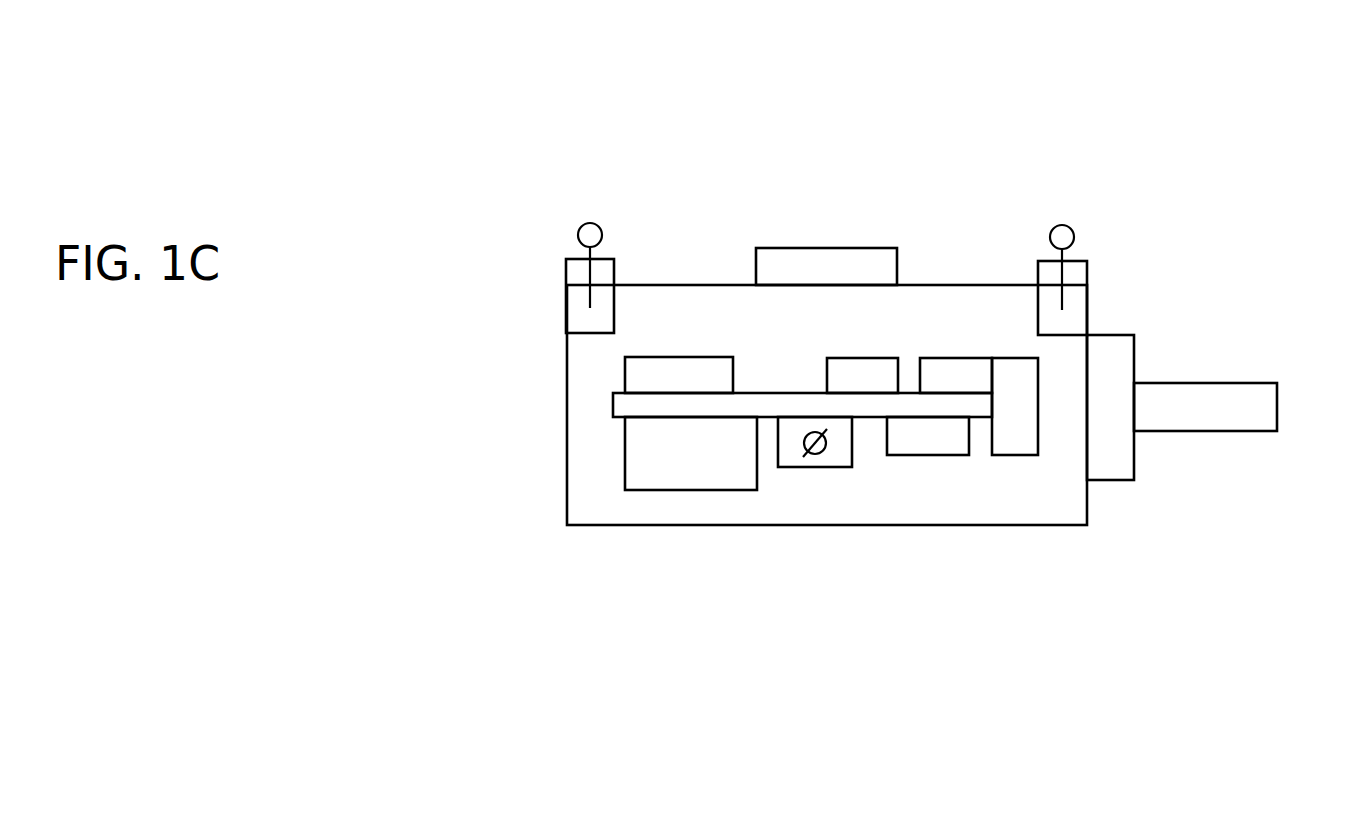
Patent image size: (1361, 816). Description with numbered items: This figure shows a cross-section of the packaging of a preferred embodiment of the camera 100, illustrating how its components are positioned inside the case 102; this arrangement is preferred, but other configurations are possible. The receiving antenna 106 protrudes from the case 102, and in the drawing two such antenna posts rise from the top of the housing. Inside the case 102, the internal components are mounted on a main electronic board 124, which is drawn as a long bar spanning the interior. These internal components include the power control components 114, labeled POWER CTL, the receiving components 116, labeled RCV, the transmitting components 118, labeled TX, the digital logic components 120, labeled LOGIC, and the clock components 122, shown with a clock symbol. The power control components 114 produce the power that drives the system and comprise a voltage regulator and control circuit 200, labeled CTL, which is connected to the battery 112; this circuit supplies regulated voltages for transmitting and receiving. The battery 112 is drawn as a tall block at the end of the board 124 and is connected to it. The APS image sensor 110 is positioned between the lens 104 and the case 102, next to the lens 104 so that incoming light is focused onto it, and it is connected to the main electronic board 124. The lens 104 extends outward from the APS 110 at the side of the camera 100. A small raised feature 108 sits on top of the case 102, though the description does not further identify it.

The camera 100 is at (1133, 92).
The case 102 is at (565, 405).
The lens 104 is at (1182, 431).
The receiving antenna 106 is at (565, 293).
The button 108 is at (754, 250).
The APS image sensor 110 is at (1112, 480).
The battery 112 is at (1016, 455).
The power control components 114 is at (660, 490).
The receiving components 116 is at (875, 358).
The transmitting components 118 is at (920, 455).
The digital logic components 120 is at (623, 382).
The clock components 122 is at (803, 467).
The main electronic board 124 is at (612, 407).
The voltage regulator and control circuit 200 is at (955, 358).